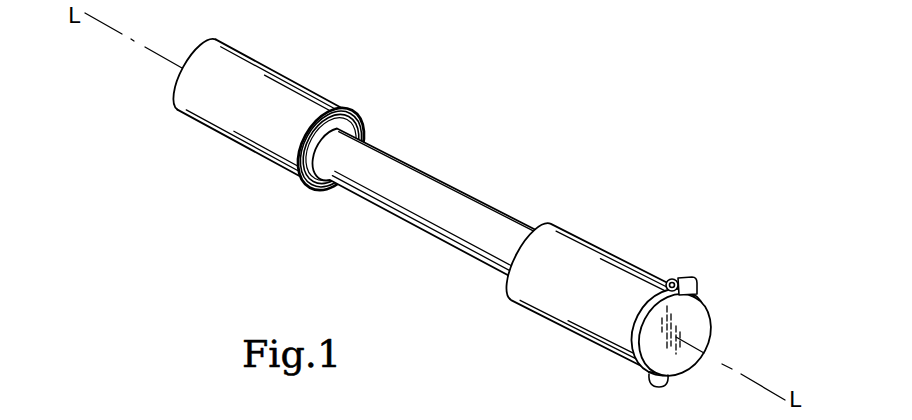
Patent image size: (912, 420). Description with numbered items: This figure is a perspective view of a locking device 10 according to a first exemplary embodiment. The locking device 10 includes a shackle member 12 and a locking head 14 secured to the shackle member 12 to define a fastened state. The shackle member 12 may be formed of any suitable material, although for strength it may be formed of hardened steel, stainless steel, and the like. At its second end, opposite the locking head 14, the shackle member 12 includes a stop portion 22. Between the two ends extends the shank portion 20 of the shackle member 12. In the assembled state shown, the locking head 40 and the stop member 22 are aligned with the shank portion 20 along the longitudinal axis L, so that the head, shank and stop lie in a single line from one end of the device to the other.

The locking device 10 is at (553, 113).
The shackle member 12 is at (432, 242).
The locking head 14 is at (562, 332).
The shank portion 20 is at (415, 207).
The stop portion 22 is at (296, 75).
The locking head 40 is at (627, 237).